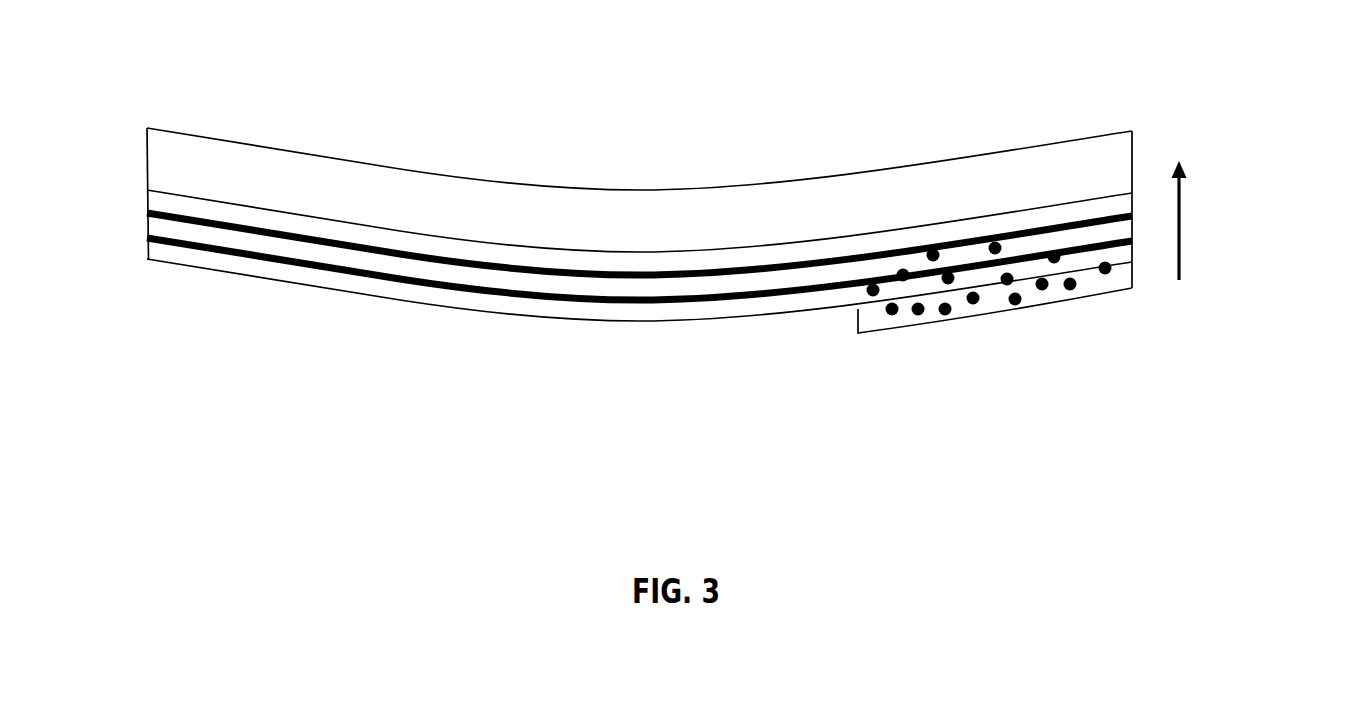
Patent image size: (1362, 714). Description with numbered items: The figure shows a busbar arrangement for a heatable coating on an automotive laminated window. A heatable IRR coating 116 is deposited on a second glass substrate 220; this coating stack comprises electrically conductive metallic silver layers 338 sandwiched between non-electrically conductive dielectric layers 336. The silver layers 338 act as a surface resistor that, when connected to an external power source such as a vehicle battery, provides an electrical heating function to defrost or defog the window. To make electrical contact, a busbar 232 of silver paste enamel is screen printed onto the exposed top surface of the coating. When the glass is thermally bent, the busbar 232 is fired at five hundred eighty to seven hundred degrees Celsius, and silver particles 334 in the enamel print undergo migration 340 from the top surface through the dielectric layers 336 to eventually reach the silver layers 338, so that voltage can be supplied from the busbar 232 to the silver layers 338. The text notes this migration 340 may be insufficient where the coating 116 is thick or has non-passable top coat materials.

The heatable IRR coating 116 is at (580, 196).
The second glass substrate 220 is at (703, 217).
The busbar 232 is at (1030, 349).
The silver particles 334 is at (1107, 268).
The non-electrically conductive dielectric layers 336 is at (359, 288).
The metallic silver layers 338 is at (253, 258).
The migration 340 is at (1182, 220).